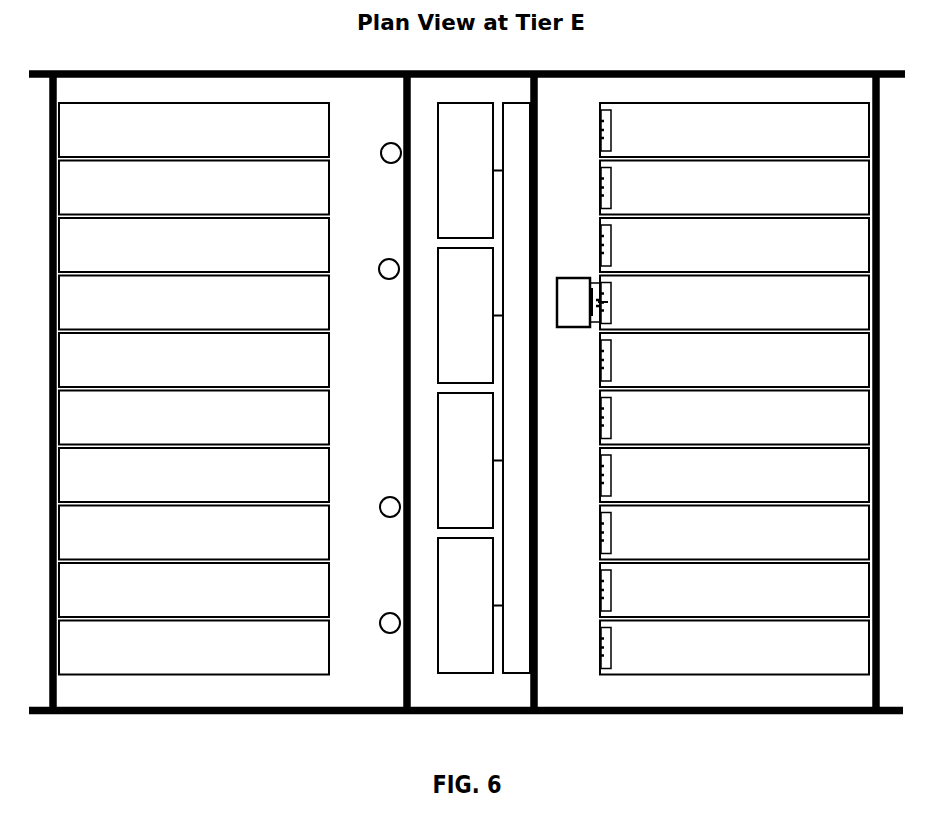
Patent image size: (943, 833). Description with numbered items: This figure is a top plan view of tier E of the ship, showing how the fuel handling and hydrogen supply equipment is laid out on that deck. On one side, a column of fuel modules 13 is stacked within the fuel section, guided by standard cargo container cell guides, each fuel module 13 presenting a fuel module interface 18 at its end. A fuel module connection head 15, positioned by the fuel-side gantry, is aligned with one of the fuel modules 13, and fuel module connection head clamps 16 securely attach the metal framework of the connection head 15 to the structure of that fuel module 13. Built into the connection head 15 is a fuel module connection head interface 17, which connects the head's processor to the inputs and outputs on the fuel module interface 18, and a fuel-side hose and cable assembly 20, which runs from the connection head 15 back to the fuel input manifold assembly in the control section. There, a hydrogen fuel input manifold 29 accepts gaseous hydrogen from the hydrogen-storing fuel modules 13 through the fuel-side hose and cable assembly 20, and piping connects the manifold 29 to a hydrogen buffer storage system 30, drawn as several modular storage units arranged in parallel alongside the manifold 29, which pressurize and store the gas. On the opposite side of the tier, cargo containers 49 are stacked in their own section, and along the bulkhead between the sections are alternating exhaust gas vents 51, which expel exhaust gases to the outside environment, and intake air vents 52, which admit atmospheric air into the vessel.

The fuel module 13 is at (734, 389).
The fuel module connection head 15 is at (577, 277).
The fuel module connection head clamps 16 is at (594, 283).
The fuel module connection head interface 17 is at (594, 316).
The fuel module interface 18 is at (611, 304).
The fuel-side hose and cable assembly 20 is at (543, 247).
The hydrogen fuel input manifold 29 is at (516, 388).
The hydrogen buffer storage system 30 is at (470, 388).
The cargo containers 49 is at (194, 389).
The exhaust gas vents 51 is at (387, 259).
The intake air vents 52 is at (389, 143).